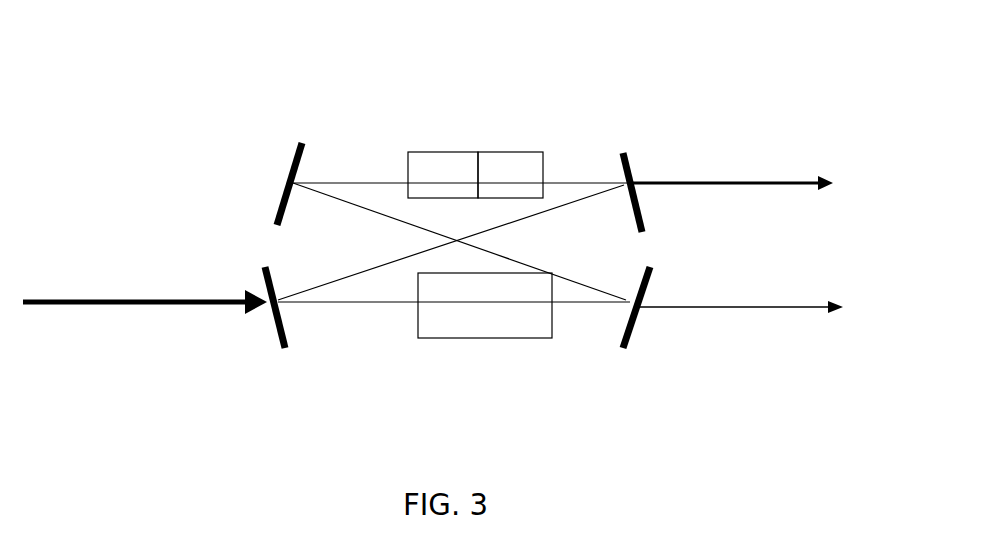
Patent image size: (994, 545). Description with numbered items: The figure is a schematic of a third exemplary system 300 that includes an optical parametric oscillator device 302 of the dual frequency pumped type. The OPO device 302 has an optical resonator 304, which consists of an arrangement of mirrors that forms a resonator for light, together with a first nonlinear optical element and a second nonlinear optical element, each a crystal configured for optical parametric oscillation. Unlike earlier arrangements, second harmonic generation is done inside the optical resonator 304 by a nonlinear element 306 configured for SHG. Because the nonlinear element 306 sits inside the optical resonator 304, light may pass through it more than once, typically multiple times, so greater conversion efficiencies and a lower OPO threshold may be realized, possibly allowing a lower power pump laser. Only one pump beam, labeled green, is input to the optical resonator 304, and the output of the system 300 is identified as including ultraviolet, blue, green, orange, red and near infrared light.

The third exemplary system 300 is at (200, 80).
The optical parametric oscillator device 302 is at (607, 102).
The optical resonator 304 is at (357, 388).
The nonlinear element 306 is at (407, 118).